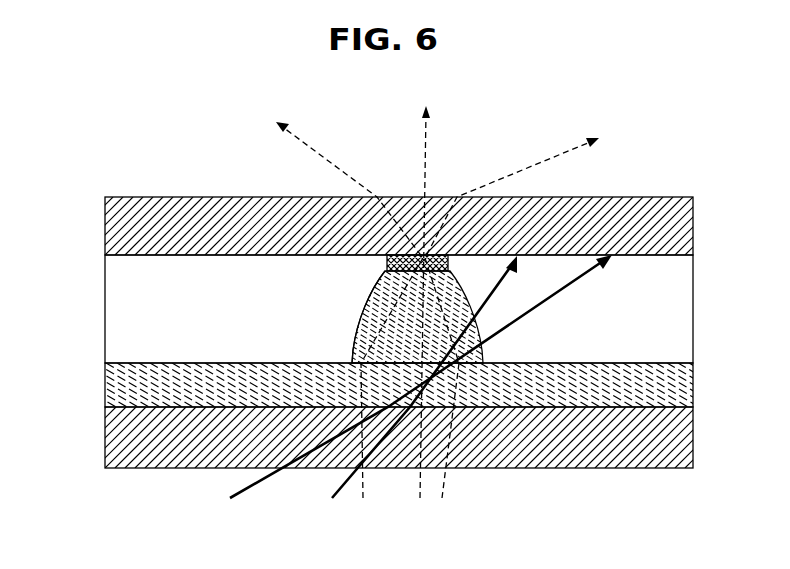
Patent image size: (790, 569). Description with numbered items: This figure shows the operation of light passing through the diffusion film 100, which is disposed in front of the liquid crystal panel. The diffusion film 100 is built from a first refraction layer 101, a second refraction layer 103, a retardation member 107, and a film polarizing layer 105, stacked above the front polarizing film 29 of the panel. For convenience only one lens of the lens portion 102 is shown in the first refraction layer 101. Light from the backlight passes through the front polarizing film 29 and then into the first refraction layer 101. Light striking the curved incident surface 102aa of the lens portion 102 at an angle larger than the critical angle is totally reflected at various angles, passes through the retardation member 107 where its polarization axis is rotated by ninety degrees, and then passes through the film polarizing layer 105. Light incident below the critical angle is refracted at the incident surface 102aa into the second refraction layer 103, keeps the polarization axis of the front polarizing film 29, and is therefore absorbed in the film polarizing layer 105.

The diffusion film 100 is at (92, 318).
The film polarizing layer 105 is at (693, 226).
The second refraction layer 103 is at (693, 311).
The first refraction layer 101 is at (693, 387).
The front polarizing film 29 is at (693, 440).
The retardation member 107 is at (386, 264).
The lens portion 102 is at (353, 348).
The incident surface 102aa is at (369, 293).